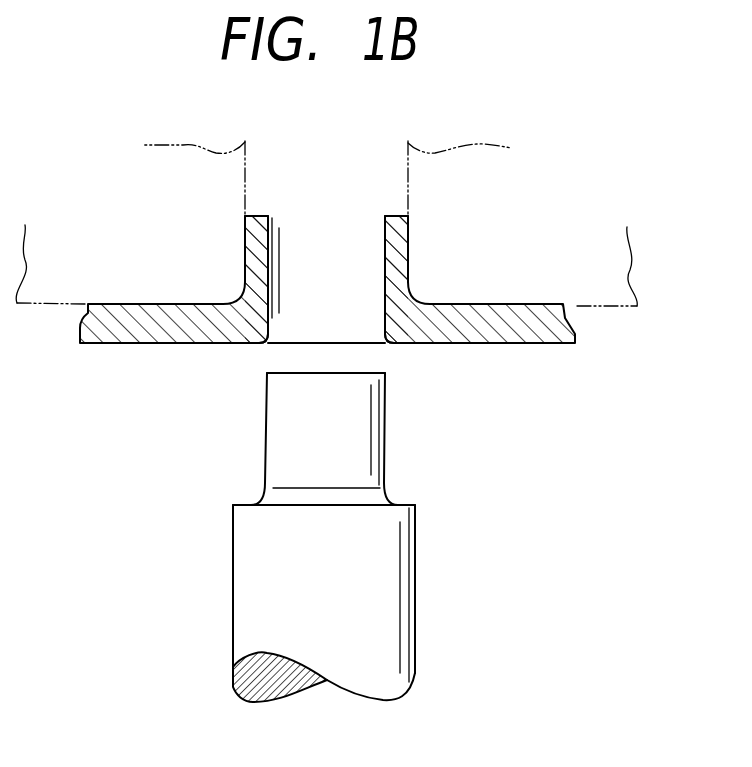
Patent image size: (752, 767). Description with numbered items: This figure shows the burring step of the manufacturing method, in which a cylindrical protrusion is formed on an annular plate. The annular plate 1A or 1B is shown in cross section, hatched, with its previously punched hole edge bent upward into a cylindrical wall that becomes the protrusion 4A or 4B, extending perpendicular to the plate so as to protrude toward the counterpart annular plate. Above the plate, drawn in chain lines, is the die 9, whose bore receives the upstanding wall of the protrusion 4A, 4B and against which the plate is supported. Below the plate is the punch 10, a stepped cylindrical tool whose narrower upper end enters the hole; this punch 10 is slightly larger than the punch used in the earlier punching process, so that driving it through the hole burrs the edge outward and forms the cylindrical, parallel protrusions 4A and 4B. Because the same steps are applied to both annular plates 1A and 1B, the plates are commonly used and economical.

The die 9 is at (446, 170).
The annular plate 1A is at (120, 397).
The annular plate 1B is at (326, 326).
The protrusion 4A is at (262, 268).
The protrusion 4B is at (326, 247).
The punch 10 is at (465, 567).